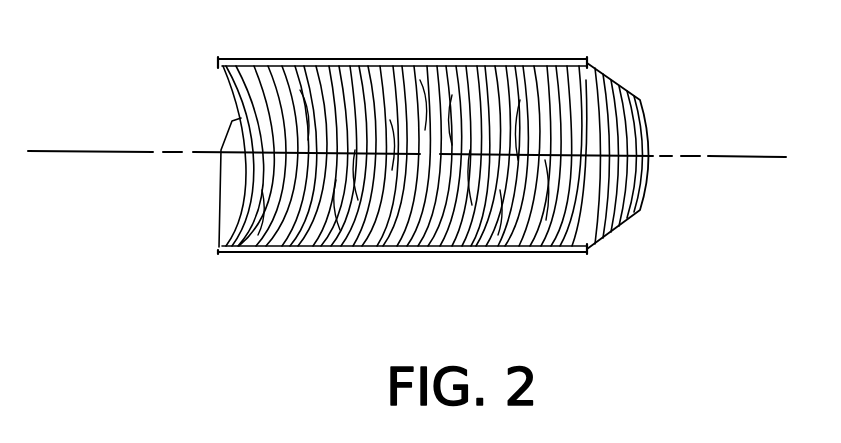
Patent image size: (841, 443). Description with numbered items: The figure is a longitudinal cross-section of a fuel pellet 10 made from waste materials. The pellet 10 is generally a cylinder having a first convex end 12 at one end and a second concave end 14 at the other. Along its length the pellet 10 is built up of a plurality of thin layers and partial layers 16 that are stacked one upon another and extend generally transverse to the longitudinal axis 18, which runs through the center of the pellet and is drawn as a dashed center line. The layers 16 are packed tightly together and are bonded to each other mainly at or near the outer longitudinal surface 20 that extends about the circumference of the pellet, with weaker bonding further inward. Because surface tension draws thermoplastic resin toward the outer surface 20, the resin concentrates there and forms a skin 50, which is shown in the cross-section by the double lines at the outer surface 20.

The fuel pellet 10 is at (667, 94).
The first convex end 12 is at (650, 175).
The second concave end 14 is at (233, 170).
The layers and partial layers 16 is at (468, 236).
The longitudinal axis 18 is at (98, 150).
The outer longitudinal surface 20 is at (445, 62).
The skin 50 is at (367, 62).